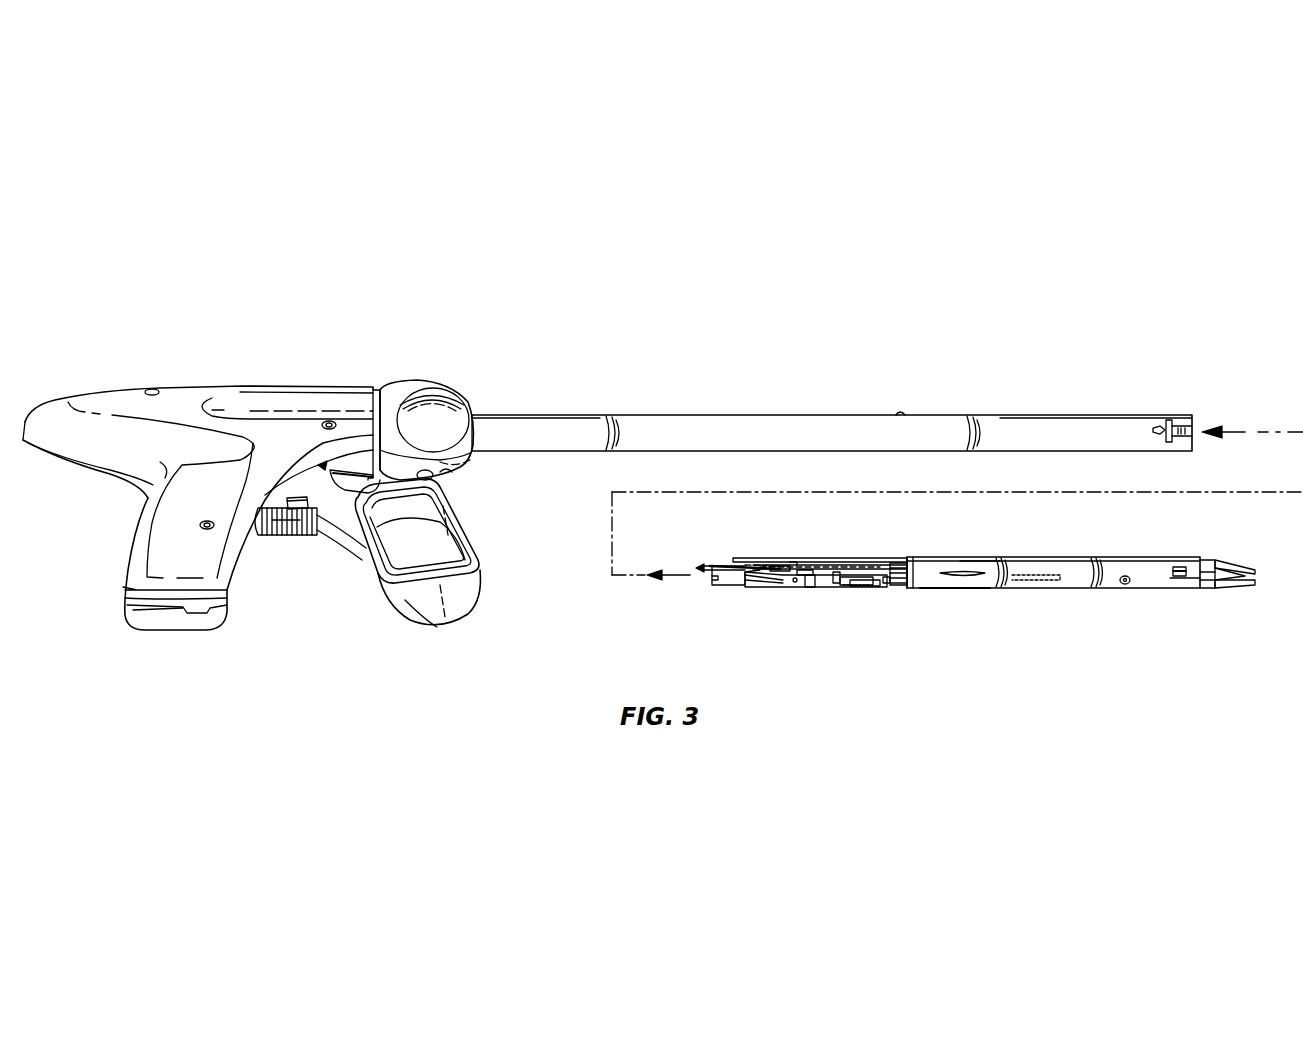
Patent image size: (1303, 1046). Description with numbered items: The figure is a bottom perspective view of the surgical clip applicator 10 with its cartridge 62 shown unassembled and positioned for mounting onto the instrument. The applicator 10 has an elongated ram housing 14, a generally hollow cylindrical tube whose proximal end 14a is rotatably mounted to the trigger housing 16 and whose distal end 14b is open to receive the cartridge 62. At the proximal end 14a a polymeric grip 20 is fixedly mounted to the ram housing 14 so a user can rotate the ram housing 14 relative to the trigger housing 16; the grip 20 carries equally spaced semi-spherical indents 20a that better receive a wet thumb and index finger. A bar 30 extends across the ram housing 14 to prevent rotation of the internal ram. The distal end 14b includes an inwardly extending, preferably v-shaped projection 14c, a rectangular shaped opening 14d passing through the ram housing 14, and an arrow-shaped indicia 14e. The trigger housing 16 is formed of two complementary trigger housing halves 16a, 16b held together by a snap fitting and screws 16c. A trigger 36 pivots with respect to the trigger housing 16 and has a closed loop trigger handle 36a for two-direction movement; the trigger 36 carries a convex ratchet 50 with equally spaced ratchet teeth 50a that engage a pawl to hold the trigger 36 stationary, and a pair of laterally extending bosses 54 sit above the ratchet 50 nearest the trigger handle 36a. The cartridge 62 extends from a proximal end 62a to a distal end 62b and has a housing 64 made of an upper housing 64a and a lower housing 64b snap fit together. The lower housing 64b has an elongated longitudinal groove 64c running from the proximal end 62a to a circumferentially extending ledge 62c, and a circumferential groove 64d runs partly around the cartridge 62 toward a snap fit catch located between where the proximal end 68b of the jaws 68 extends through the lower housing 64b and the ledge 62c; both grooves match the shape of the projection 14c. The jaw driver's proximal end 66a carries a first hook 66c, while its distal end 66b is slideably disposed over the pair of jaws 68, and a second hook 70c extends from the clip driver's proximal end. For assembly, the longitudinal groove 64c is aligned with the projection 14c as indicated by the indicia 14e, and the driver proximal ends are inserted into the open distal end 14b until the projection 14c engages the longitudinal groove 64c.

The surgical clip applicator 10 is at (1105, 297).
The ram housing 14 is at (828, 415).
The proximal end of the ram housing 14a is at (485, 415).
The distal end of the ram housing 14b is at (1130, 415).
The projection 14c is at (1193, 427).
The rectangular shaped opening 14d is at (1170, 420).
The indicia 14e is at (1160, 424).
The trigger housing 16 is at (113, 392).
The trigger housing half 16a is at (78, 465).
The trigger housing half 16b is at (133, 588).
The screws 16c is at (200, 523).
The grip 20 is at (393, 385).
The semi-spherical indents 20a is at (437, 410).
The bar 30 is at (902, 413).
The trigger 36 is at (372, 580).
The trigger handle 36a is at (392, 602).
The ratchet 50 is at (274, 542).
The ratchet teeth 50a is at (290, 545).
The laterally extending bosses 54 is at (295, 498).
The cartridge 62 is at (1040, 592).
The proximal end of the cartridge 62a is at (775, 556).
The distal end of the cartridge 62b is at (1183, 565).
The ledge 62c is at (917, 592).
The housing 64 is at (975, 570).
The upper housing 64a is at (1040, 560).
The lower housing 64b is at (1005, 592).
The longitudinal groove 64c is at (825, 566).
The circumferential groove 64d is at (897, 572).
The proximal end of the jaw driver 66a is at (737, 592).
The distal end of the jaw driver 66b is at (1150, 588).
The first hook 66c is at (700, 585).
The jaws 68 is at (1240, 588).
The proximal end of the jaws 68b is at (885, 590).
The second hook 70c is at (703, 568).